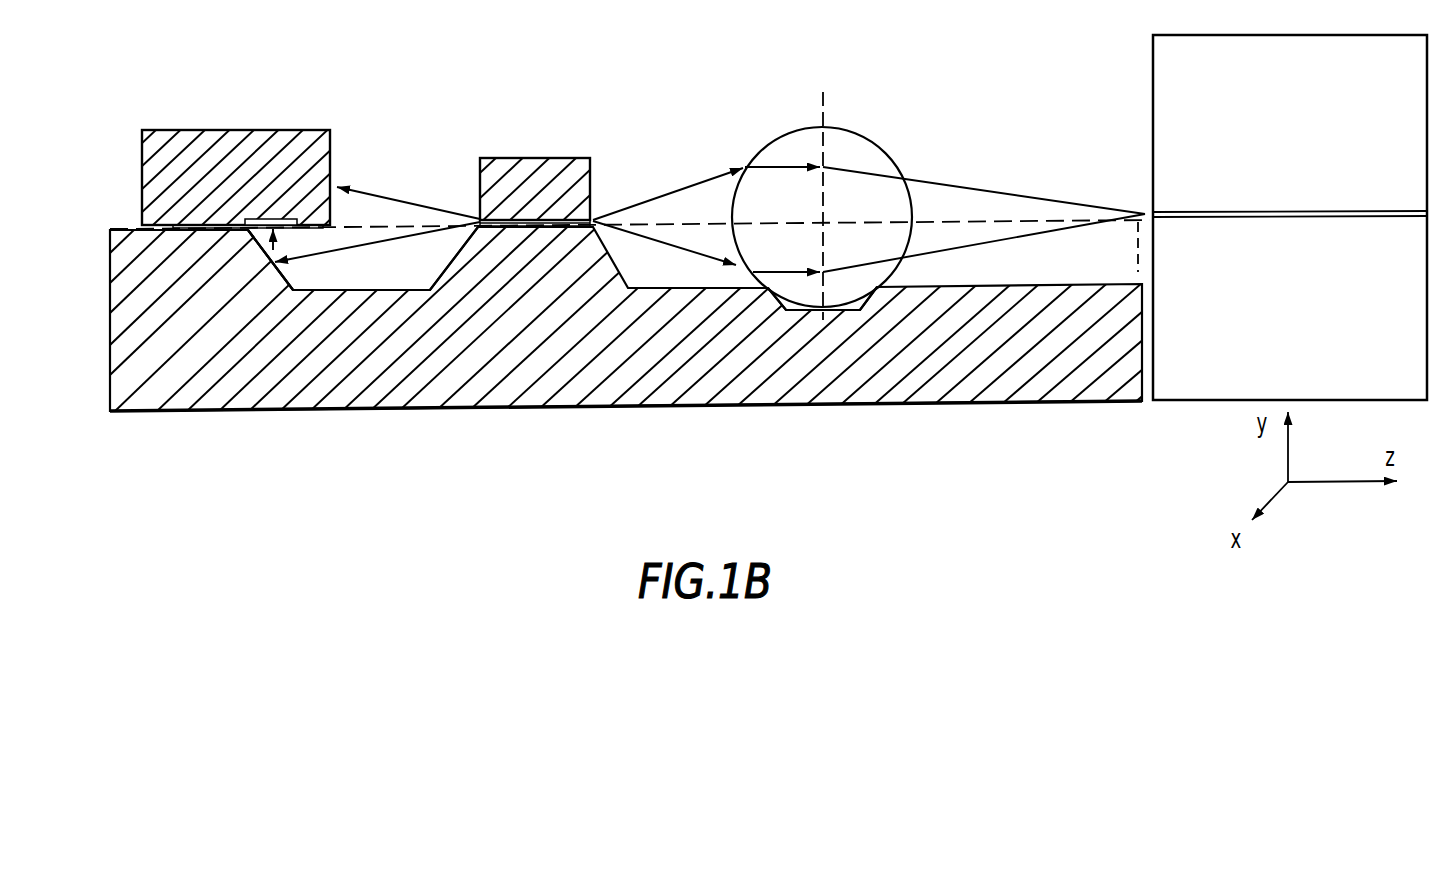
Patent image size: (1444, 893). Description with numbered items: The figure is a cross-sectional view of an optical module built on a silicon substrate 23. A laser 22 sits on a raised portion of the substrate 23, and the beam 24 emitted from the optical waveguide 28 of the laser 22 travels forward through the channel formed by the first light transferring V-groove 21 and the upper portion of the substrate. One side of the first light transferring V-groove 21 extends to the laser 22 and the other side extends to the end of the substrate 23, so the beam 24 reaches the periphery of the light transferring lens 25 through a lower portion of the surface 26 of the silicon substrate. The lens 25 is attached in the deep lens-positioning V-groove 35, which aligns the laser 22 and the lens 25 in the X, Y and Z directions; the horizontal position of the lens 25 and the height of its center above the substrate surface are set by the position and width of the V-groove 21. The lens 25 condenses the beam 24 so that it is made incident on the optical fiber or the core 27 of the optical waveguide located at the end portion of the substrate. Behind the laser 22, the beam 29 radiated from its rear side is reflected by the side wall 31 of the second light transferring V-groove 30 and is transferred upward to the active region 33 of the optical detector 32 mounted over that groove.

The first light transferring V-groove 21 is at (1000, 263).
The laser 22 is at (541, 156).
The substrate 23 is at (727, 367).
The beam 24 is at (643, 216).
The light transferring lens 25 is at (878, 156).
The surface 26 is at (962, 220).
The core 27 is at (1187, 212).
The optical waveguide 28 is at (553, 214).
The beam 29 is at (406, 225).
The second light transferring V-groove 30 is at (410, 270).
The side wall 31 is at (272, 280).
The optical detector 32 is at (272, 130).
The active region 33 is at (262, 212).
The deep lens-positioning V-groove 35 is at (783, 312).